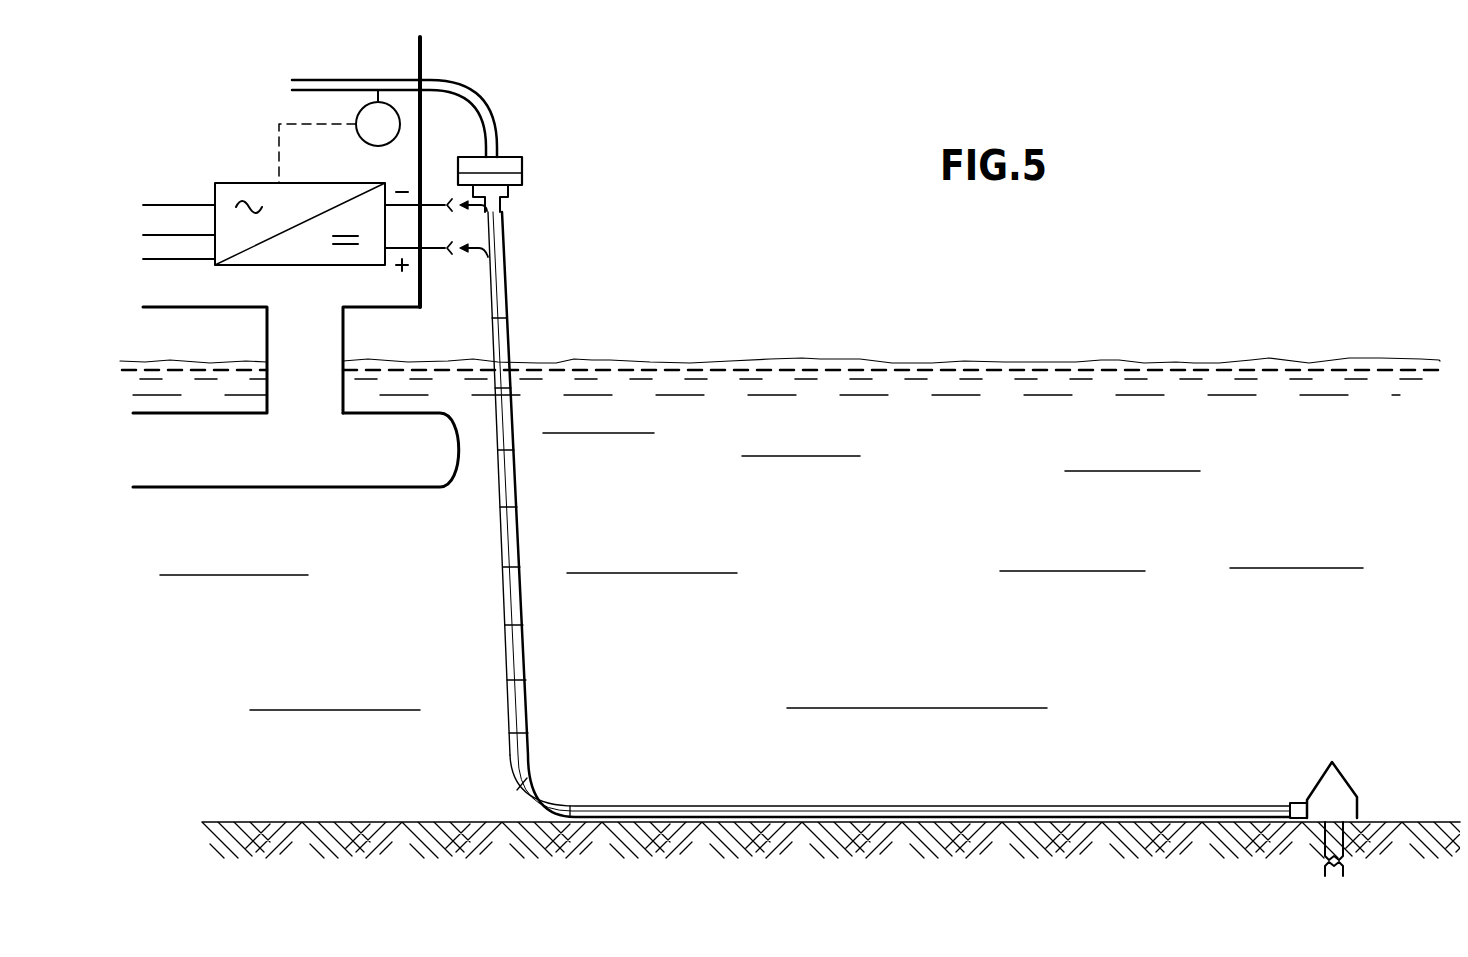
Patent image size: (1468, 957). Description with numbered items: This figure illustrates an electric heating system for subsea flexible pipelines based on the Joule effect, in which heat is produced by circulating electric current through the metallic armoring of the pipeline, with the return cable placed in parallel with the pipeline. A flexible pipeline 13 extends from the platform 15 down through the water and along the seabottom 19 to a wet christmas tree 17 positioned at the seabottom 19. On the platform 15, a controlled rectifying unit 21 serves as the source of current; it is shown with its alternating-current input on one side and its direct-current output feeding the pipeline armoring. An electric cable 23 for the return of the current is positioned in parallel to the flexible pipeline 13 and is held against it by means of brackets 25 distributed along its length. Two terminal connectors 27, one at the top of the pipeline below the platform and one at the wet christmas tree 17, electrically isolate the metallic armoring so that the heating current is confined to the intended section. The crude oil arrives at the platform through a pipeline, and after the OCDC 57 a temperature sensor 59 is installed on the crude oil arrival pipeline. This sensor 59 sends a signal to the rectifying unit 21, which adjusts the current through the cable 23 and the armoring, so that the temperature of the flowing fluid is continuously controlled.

The flexible pipeline 13 is at (519, 533).
The platform 15 is at (327, 472).
The wet christmas tree 17 is at (1327, 775).
The seabottom 19 is at (395, 821).
The controlled rectifying unit 21 is at (243, 183).
The electric cable 23 is at (505, 583).
The brackets 25 is at (523, 637).
The terminal connectors 27 is at (507, 198).
The OCDC 57 is at (523, 162).
The temperature sensor 59 is at (370, 133).